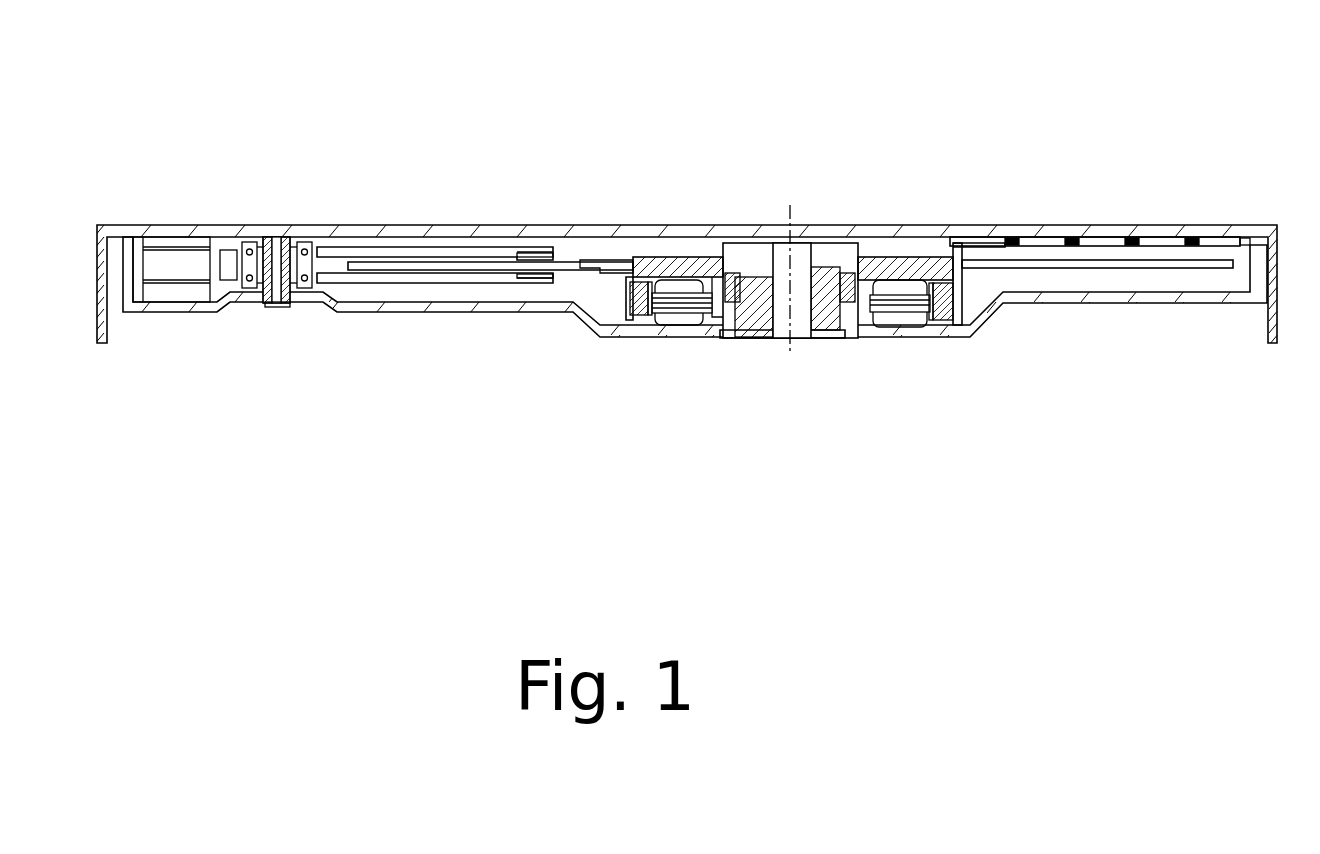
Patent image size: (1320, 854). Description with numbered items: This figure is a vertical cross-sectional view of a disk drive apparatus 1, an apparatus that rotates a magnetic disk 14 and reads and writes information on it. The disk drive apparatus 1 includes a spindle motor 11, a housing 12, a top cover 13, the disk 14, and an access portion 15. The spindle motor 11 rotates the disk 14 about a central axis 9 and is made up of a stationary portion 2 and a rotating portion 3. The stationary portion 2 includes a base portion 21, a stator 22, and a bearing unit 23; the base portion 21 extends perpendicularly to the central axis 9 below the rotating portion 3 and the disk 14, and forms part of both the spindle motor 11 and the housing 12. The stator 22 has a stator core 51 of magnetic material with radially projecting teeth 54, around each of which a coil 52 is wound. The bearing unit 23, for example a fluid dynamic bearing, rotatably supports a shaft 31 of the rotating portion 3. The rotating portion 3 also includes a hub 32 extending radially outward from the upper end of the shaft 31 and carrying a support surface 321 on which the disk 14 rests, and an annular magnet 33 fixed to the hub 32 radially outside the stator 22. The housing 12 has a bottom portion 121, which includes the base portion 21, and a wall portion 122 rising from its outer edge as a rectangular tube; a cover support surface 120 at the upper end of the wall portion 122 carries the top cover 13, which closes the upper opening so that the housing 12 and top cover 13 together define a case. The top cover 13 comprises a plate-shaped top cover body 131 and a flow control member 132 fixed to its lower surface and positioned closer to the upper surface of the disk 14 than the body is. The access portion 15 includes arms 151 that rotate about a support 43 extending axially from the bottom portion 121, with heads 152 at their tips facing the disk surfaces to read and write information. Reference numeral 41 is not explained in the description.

The disk drive apparatus 1 is at (178, 140).
The stationary portion 2 is at (695, 341).
The rotating portion 3 is at (781, 241).
The central axis 9 is at (788, 210).
The spindle motor 11 is at (703, 298).
The housing 12 is at (1135, 336).
The top cover 13 is at (1165, 210).
The magnetic disk 14 is at (1043, 268).
The access portion 15 is at (475, 261).
The base portion 21 is at (860, 330).
The stator 22 is at (801, 363).
The bearing unit 23 is at (828, 338).
The shaft 31 is at (806, 240).
The hub 32 is at (760, 245).
The magnet 33 is at (953, 248).
The base bottom plate 41 is at (1107, 303).
The support 43 is at (270, 232).
The stator core 51 is at (929, 330).
The coils 52 is at (895, 325).
The teeth 54 is at (667, 314).
The cover support surface 120 is at (1271, 226).
The bottom portion 121 is at (1164, 318).
The wall portion 122 is at (1254, 318).
The top cover body 131 is at (1012, 238).
The flow control member 132 is at (1082, 238).
The arms 151 is at (462, 255).
The heads 152 is at (528, 254).
The support surface 321 is at (596, 260).